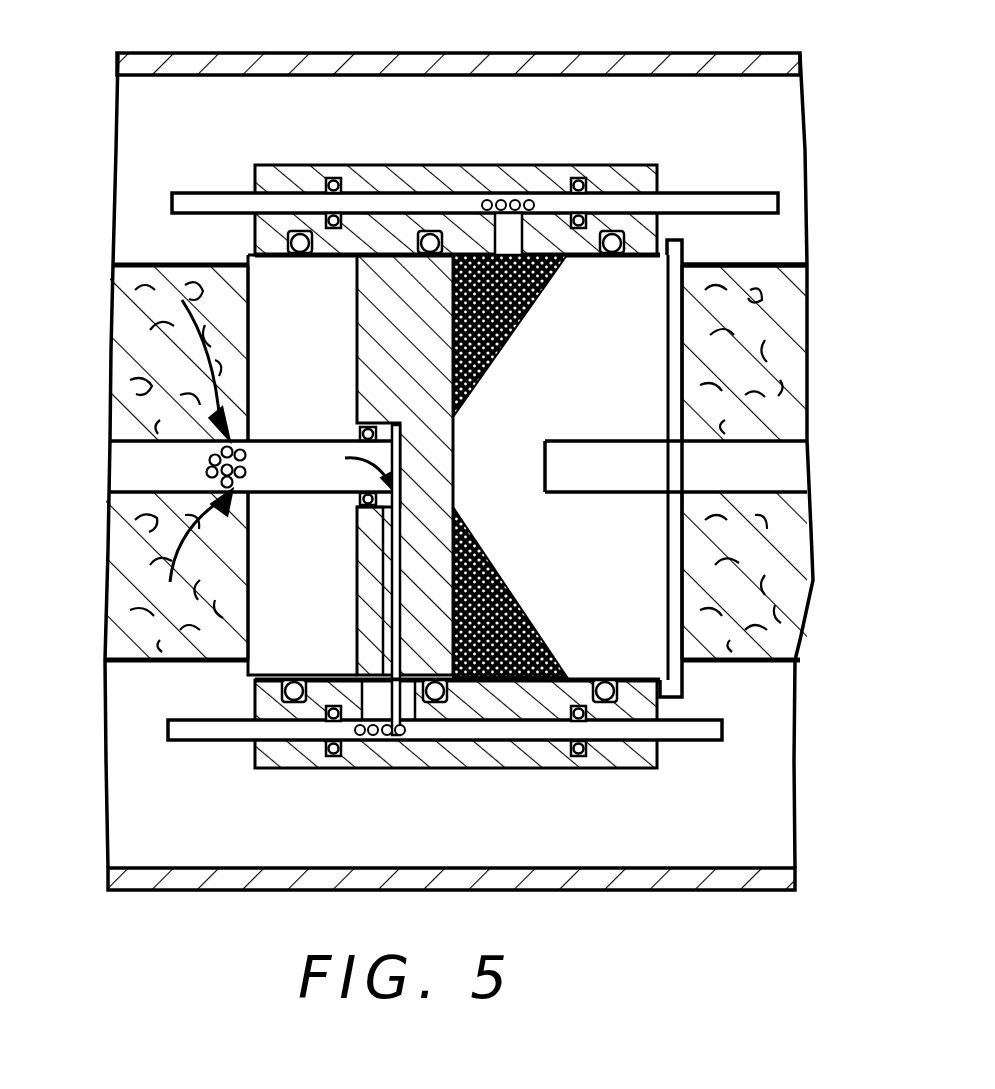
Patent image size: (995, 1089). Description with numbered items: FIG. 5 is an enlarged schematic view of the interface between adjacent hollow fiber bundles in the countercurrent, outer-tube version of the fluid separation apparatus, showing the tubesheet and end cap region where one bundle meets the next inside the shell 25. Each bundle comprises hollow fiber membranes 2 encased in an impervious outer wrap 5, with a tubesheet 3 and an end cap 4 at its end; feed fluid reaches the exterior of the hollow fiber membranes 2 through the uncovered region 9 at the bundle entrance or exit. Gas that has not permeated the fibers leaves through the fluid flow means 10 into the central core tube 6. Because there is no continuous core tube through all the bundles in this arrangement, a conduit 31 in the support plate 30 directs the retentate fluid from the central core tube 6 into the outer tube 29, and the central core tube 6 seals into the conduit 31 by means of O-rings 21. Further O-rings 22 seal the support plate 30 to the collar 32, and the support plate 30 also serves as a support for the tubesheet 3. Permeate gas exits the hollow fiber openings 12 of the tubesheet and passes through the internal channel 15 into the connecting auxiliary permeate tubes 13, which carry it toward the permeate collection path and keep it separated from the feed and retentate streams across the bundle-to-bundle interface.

The hollow fiber membranes 2 is at (138, 642).
The tubesheet 3 is at (658, 296).
The end cap 4 is at (262, 300).
The outer wrap 5 is at (772, 266).
The central core tube 6 is at (277, 450).
The uncovered region 9 is at (698, 266).
The fluid flow means 10 is at (208, 452).
The hollow fiber openings 12 is at (466, 248).
The auxiliary permeate tubes 13 is at (430, 195).
The internal channel 15 is at (506, 228).
The O-rings 21 is at (357, 425).
The O-rings 22 is at (440, 700).
The shell 25 is at (270, 64).
The outer tube 29 is at (688, 734).
The support plate 30 is at (388, 288).
The conduit 31 is at (378, 742).
The collar 32 is at (523, 712).